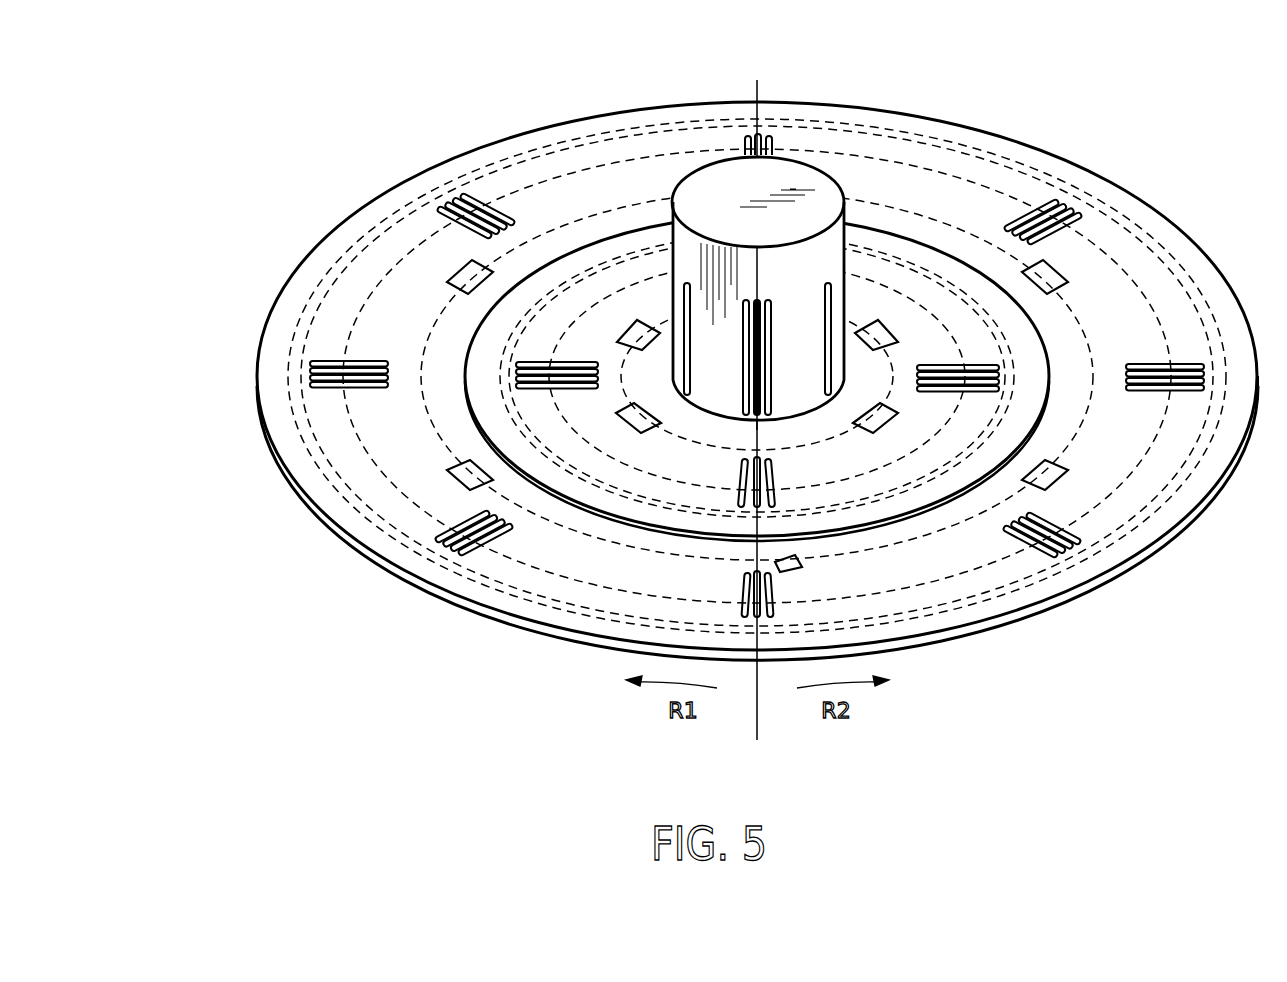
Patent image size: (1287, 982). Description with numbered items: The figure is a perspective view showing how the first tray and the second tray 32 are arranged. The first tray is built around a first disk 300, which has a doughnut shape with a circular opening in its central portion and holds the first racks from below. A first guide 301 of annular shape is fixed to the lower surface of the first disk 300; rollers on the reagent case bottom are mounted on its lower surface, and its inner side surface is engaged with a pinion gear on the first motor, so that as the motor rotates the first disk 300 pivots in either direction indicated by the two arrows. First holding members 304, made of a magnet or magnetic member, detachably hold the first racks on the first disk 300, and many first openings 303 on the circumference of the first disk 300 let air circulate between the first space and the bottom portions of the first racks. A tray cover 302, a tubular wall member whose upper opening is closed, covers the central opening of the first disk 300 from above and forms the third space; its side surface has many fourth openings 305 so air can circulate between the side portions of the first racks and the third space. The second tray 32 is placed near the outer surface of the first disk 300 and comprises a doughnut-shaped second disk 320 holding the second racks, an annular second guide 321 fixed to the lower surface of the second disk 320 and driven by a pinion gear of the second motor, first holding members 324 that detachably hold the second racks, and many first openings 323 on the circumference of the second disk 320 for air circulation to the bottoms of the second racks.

The second tray 32 is at (693, 381).
The second disk 320 is at (280, 320).
The second guide 321 is at (287, 367).
The first holding member 324 is at (447, 472).
The first openings 323 is at (753, 587).
The first openings 303 is at (775, 481).
The first disk 300 is at (905, 250).
The first guide 301 is at (930, 273).
The first holding member 304 is at (870, 330).
The tray cover 302 is at (807, 180).
The fourth openings 305 is at (684, 312).